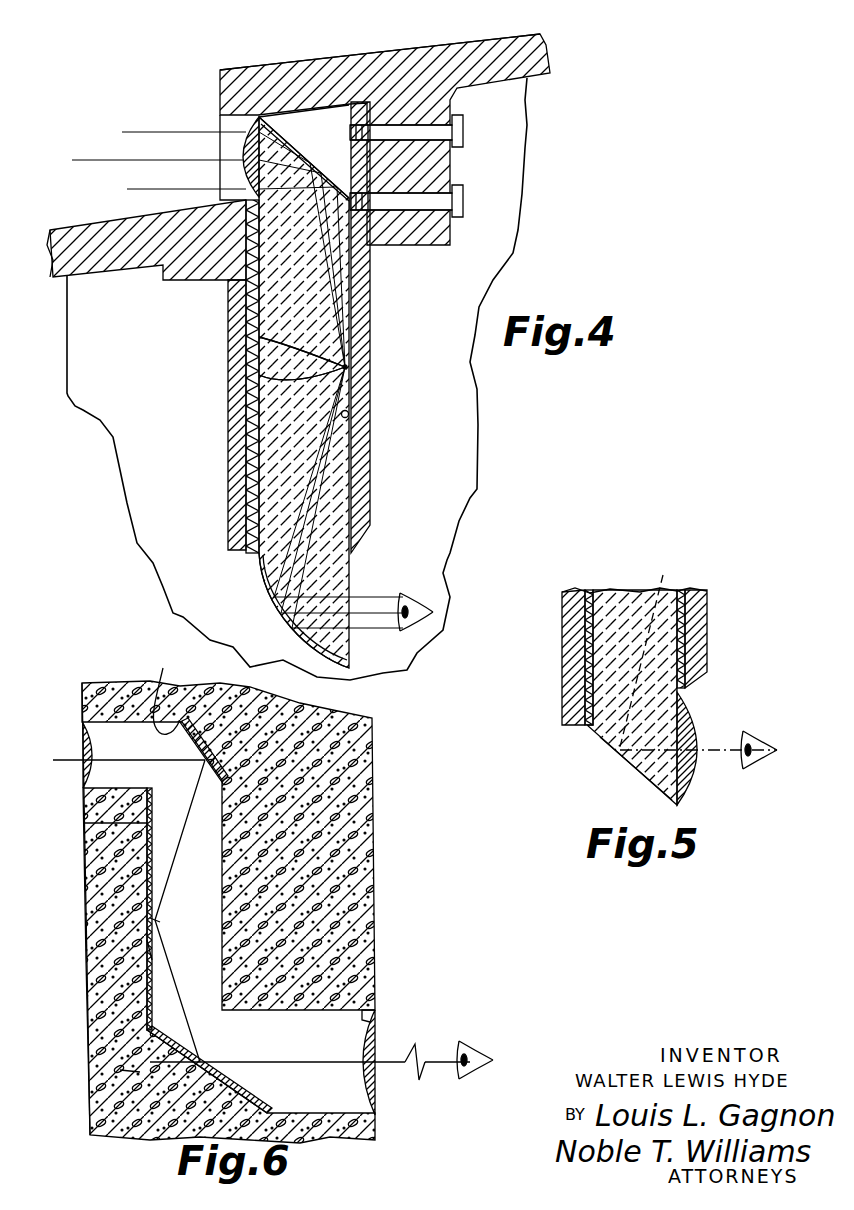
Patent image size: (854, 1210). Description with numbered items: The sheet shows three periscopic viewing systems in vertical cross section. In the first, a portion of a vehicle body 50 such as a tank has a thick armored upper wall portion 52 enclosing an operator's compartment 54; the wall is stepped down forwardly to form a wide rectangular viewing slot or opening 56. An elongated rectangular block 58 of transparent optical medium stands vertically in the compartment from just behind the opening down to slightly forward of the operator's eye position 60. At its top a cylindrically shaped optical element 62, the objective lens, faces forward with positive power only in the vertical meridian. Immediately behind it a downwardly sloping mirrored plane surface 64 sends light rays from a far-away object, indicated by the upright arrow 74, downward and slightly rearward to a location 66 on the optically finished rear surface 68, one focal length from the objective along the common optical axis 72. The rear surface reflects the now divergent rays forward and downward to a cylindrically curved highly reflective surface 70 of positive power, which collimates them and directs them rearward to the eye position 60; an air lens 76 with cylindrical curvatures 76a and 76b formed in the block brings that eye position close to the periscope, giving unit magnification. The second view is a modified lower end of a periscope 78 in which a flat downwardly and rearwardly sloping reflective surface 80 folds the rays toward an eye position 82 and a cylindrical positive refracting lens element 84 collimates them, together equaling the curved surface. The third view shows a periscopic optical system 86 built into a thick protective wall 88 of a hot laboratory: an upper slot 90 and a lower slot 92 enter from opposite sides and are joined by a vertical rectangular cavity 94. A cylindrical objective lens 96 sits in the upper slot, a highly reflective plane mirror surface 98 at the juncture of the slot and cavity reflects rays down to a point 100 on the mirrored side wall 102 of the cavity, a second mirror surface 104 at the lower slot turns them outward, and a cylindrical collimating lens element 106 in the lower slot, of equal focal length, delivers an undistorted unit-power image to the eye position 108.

In FIG. 4, the vehicle body 50 is at (357, 52).
In FIG. 4, the upper wall portion 52 is at (470, 50).
In FIG. 4, the operator's compartment 54 is at (530, 115).
In FIG. 4, the viewing slot or opening 56 is at (222, 117).
In FIG. 4, the block of transparent optical medium 58 is at (260, 432).
In FIG. 4, the eye position 60 is at (407, 598).
In FIG. 4, the cylindrically shaped optical element 62 is at (244, 150).
In FIG. 4, the downwardly sloping plane reflecting surface 64 is at (301, 180).
In FIG. 4, the focal point location 66 is at (347, 367).
In FIG. 4, the rear surface 68 is at (350, 414).
In FIG. 4, the cylindrically curved reflective surface 70 is at (270, 582).
In FIG. 4, the common optical axis 72 is at (355, 279).
In FIG. 4, the upright arrow 74 is at (62, 146).
In FIG. 4, the air lens 76 is at (343, 363).
In FIG. 4, the air lens curvature 76a is at (272, 330).
In FIG. 4, the air lens curvature 76b is at (273, 385).
In FIG. 5, the periscope 78 is at (616, 619).
In FIG. 5, the flat downwardly and rearwardly sloping reflective surface 80 is at (603, 732).
In FIG. 5, the eye position 82 is at (759, 756).
In FIG. 5, the cylindrical positive refracting lens element 84 is at (688, 712).
In FIG. 6, the periscopic optical system 86 is at (205, 860).
In FIG. 6, the protective wall 88 is at (345, 712).
In FIG. 6, the upper slot 90 is at (92, 790).
In FIG. 6, the lower slot 92 is at (372, 1012).
In FIG. 6, the rectangular cavity 94 is at (150, 950).
In FIG. 6, the objective lens 96 is at (84, 740).
In FIG. 6, the conduit 98 is at (166, 690).
In FIG. 6, the image point 100 is at (153, 918).
In FIG. 6, the side wall of cavity 102 is at (158, 823).
In FIG. 6, the mirror surface 104 is at (135, 1072).
In FIG. 6, the cylindrical collimating lens element 106 is at (378, 1040).
In FIG. 6, the eye position 108 is at (462, 1070).